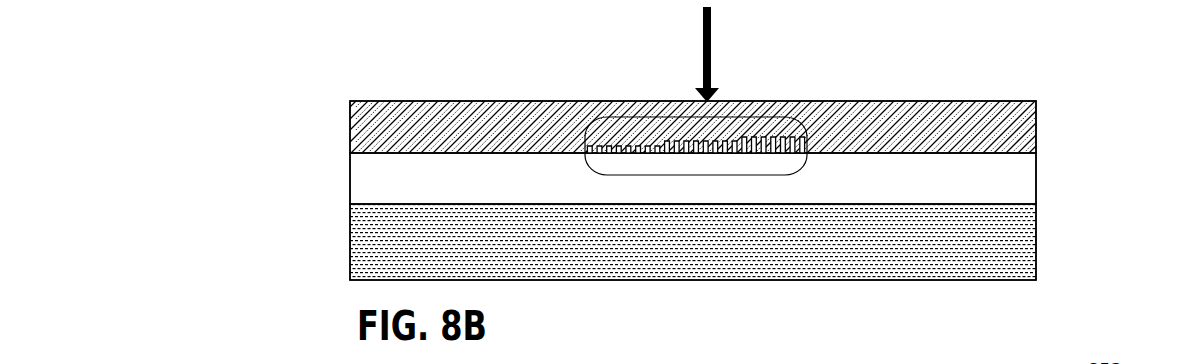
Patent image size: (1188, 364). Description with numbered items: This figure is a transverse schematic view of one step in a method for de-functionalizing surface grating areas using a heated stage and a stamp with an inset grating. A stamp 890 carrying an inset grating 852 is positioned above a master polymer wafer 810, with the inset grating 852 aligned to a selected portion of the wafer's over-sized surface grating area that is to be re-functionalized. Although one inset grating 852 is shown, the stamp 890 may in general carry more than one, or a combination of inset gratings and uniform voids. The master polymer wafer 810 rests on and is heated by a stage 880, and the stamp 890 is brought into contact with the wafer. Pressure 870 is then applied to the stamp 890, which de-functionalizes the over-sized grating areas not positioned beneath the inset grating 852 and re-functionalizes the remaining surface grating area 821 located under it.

The master polymer wafer 810 is at (1036, 180).
The remaining surface grating area 821 is at (697, 174).
The inset grating 852 is at (680, 115).
The pressure 870 is at (700, 65).
The stage 880 is at (693, 242).
The stamp 890 is at (349, 128).